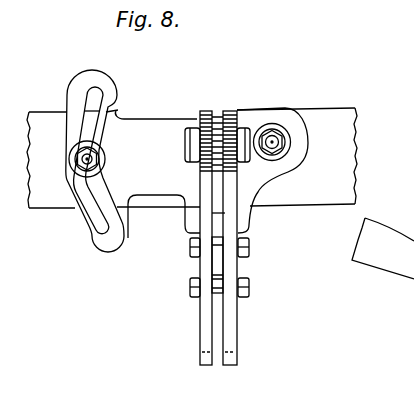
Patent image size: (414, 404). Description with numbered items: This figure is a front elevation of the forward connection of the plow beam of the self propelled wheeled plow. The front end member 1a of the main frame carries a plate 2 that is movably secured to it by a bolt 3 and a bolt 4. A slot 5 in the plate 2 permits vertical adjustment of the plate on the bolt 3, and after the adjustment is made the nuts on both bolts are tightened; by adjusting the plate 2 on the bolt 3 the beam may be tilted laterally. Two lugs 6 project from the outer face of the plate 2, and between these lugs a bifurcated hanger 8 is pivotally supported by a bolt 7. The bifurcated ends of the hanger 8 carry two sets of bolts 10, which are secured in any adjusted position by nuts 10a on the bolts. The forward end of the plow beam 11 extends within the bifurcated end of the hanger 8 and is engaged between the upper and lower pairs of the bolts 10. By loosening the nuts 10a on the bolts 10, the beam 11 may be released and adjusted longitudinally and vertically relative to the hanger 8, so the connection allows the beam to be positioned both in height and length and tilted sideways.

The front end member 1a is at (348, 140).
The plate 2 is at (258, 200).
The bolt 3 is at (285, 130).
The bolt 4 is at (80, 178).
The slot 5 is at (98, 222).
The lugs 6 is at (238, 115).
The bolt 7 is at (193, 147).
The bifurcated hanger 8 is at (218, 238).
The bolts 10 is at (259, 288).
The nuts 10a is at (190, 288).
The plow beam 11 is at (218, 268).